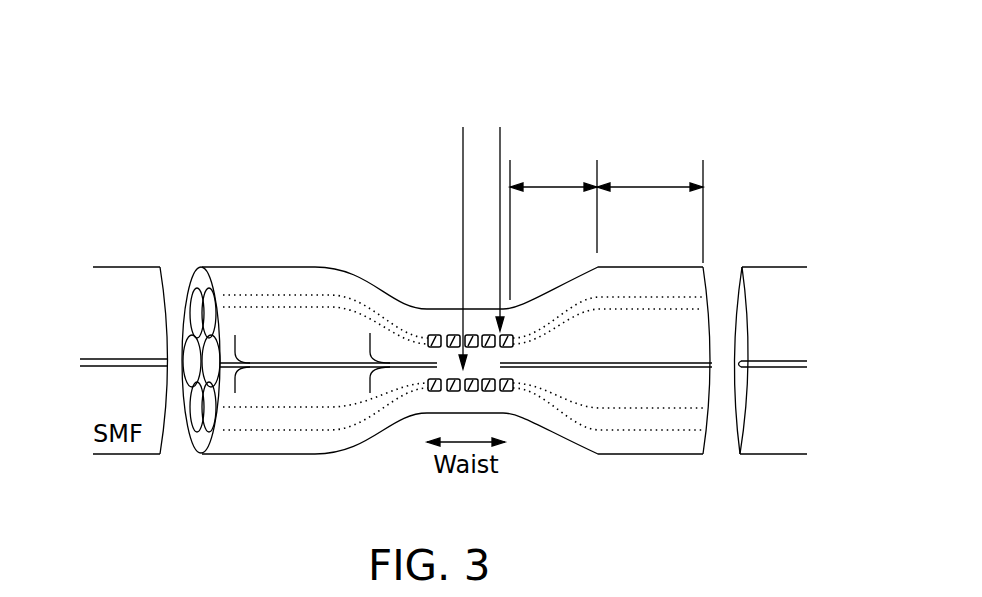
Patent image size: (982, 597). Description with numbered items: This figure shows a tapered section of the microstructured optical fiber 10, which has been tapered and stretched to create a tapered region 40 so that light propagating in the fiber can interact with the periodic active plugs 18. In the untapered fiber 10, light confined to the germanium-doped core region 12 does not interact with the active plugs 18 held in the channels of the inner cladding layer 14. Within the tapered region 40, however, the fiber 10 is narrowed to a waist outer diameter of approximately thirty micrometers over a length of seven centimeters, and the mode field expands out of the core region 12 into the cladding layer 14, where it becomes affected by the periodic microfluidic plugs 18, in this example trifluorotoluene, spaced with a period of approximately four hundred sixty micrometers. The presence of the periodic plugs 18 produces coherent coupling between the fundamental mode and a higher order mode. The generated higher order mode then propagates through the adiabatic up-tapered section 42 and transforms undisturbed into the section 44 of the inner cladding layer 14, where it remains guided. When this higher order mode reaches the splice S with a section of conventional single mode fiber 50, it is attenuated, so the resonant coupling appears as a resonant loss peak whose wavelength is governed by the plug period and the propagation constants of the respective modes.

The fiber 10 is at (273, 253).
The core region 12 is at (683, 318).
The inner cladding layer 14 is at (697, 290).
The active plugs 18 is at (513, 347).
The tapered region 40 is at (407, 53).
The adiabatic up-tapered section 42 is at (553, 225).
The section of inner cladding layer 44 is at (650, 206).
The single mode fiber 50 is at (788, 298).
The splice S is at (722, 433).